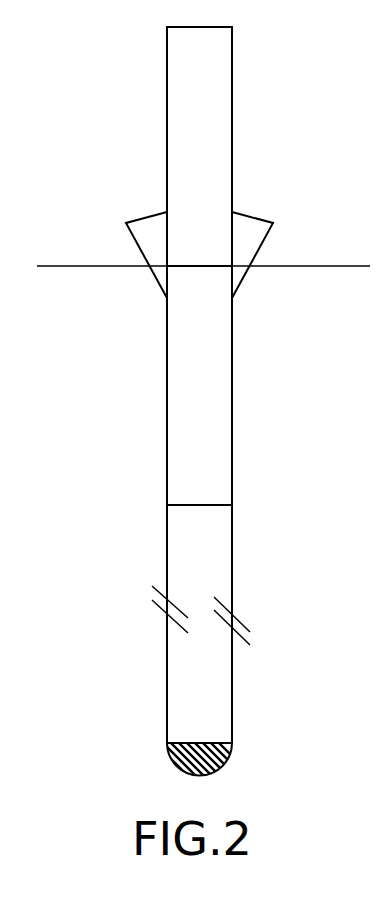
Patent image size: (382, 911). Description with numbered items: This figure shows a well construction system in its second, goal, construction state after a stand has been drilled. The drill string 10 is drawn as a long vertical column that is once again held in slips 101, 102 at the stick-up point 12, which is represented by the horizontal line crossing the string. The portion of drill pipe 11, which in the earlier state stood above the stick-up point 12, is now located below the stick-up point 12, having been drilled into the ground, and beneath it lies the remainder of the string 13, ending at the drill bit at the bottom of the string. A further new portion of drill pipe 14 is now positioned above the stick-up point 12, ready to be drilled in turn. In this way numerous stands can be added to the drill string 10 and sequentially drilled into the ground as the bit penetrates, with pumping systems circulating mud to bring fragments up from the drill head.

The drill string 10 is at (264, 82).
The portion of drill pipe 11 is at (206, 406).
The stick-up point 12 is at (100, 267).
The remainder of the string 13 is at (206, 567).
The further new portion of drill pipe 14 is at (206, 112).
The slip 101 is at (242, 227).
The slip 102 is at (152, 228).